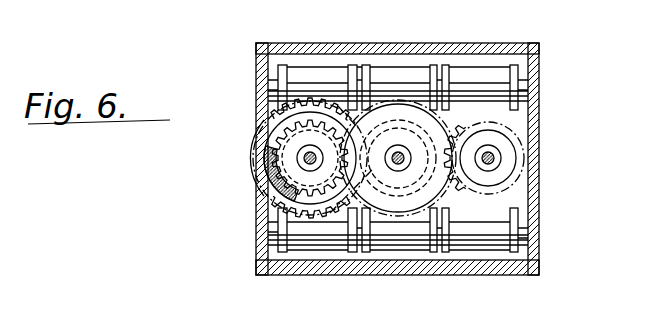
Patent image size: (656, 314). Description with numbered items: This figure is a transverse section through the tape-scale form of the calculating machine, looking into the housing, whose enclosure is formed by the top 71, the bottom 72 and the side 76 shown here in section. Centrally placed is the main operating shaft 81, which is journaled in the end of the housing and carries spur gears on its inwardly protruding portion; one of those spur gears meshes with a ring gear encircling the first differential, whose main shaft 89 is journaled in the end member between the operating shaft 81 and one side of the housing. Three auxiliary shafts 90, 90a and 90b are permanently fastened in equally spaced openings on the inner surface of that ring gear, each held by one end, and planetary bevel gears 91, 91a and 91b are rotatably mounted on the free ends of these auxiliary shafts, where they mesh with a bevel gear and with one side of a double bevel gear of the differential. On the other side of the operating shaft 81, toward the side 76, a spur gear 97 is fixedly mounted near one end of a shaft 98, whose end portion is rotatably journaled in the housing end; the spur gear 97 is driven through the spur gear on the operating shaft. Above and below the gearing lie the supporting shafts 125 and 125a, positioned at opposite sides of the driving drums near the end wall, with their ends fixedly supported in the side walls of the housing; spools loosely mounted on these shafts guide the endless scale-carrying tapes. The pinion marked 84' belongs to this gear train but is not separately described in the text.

The top 71 is at (398, 43).
The bottom 72 is at (445, 275).
The side 76 is at (539, 180).
The supporting shaft 125 is at (522, 86).
The supporting shaft 125a is at (522, 233).
The main shaft 89 is at (271, 166).
The auxiliary shaft 90 is at (268, 112).
The auxiliary shaft 90a is at (274, 196).
The auxiliary shaft 90b is at (352, 180).
The planetary bevel gear 91 is at (300, 157).
The planetary bevel gear 91a is at (280, 182).
The planetary bevel gear 91b is at (328, 212).
The main operating shaft 81 is at (410, 138).
The drive pinion 84' is at (465, 139).
The spur gear 97 is at (531, 152).
The shaft 98 is at (494, 157).